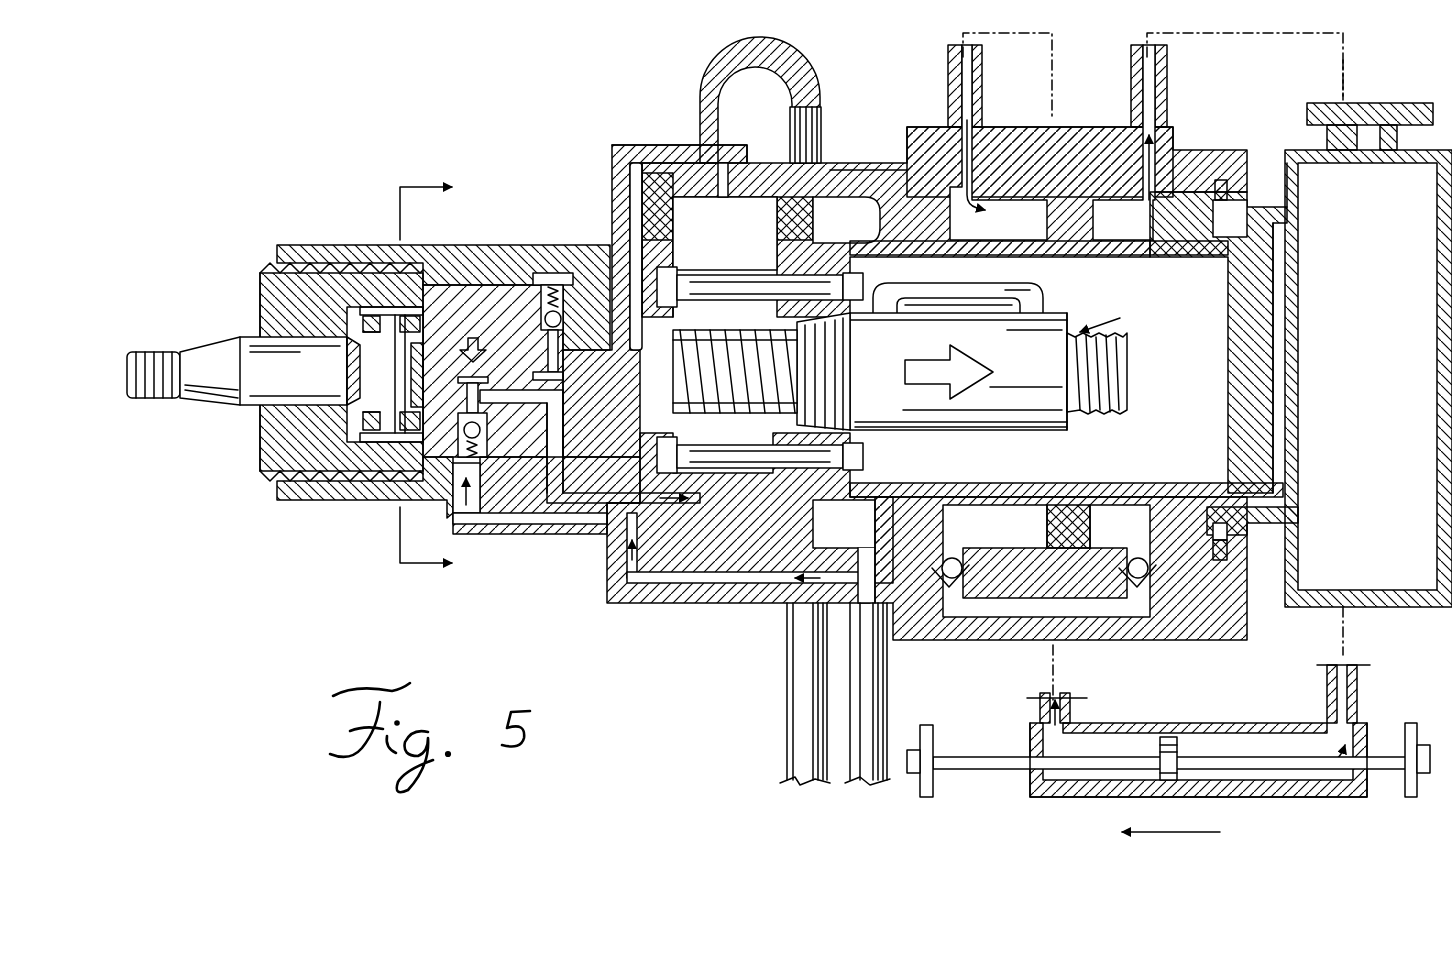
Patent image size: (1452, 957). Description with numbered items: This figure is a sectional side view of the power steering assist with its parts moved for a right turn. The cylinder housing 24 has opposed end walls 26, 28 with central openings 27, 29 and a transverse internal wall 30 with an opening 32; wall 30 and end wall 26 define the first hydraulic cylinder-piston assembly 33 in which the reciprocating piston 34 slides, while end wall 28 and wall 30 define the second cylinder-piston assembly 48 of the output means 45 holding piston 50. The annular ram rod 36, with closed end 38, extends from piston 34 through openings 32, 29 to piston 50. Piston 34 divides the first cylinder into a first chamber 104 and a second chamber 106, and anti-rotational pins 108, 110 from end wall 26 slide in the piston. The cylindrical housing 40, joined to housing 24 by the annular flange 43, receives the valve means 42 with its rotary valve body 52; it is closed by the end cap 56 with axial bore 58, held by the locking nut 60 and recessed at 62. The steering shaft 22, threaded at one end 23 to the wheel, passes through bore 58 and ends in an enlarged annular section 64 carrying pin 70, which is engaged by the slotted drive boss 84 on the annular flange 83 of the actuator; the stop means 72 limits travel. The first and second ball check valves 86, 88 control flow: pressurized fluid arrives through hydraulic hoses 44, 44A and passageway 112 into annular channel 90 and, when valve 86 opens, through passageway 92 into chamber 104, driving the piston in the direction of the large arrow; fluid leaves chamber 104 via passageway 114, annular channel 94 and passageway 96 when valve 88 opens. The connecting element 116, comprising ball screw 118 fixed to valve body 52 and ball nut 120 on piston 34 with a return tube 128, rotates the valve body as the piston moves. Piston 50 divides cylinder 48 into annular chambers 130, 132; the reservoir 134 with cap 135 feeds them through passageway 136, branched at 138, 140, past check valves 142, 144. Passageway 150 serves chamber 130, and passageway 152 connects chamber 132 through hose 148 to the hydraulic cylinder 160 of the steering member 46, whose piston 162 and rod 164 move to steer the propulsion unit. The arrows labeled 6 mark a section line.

The section line 6 is at (442, 380).
The steering shaft 22 is at (212, 340).
The threaded connection 23 is at (140, 352).
The cylinder housing 24 is at (705, 640).
The end wall 26 is at (612, 148).
The centrally disposed opening 27 is at (580, 470).
The end wall 28 is at (1190, 185).
The centrally disposed opening 29 is at (1250, 232).
The transverse internal wall 30 is at (920, 150).
The centrally disposed opening 32 is at (1040, 252).
The first hydraulic cylinder-piston assembly 33 is at (850, 165).
The reciprocating piston 34 is at (720, 190).
The annular ram rod 36 is at (822, 226).
The closed end 38 is at (1268, 335).
The cylindrical housing 40 is at (420, 270).
The valve means 42 is at (555, 270).
The annular flange 43 is at (636, 200).
The hydraulic hoses 44 is at (888, 702).
The supply pipe 44A is at (748, 62).
The output means 45 is at (1195, 658).
The steering member 46 is at (1340, 780).
The second hydraulic cylinder-piston assembly 48 is at (966, 85).
The reciprocating piston 50 is at (1065, 112).
The rotary valve body 52 is at (548, 320).
The end cap 56 is at (330, 262).
The axial bore 58 is at (230, 398).
The locking nut 60 is at (290, 492).
The recess 62 is at (375, 300).
The enlarged annular section 64 is at (446, 300).
The pin 70 is at (348, 356).
The annular stop means 72 is at (398, 300).
The annular flange 83 is at (423, 365).
The drive boss 84 is at (365, 430).
The first ball check valve 86 is at (453, 522).
The second ball check valve 88 is at (560, 295).
The annular channel 90 is at (472, 306).
The fluid passageway 92 is at (545, 500).
The annular channel 94 is at (610, 347).
The fluid passageway 96 is at (600, 232).
The first chamber 104 is at (750, 247).
The second chamber 106 is at (866, 590).
The anti-rotational pin 108 is at (880, 282).
The anti-rotational pin 110 is at (866, 458).
The fluid passageway 112 is at (680, 600).
The passageway 114 is at (598, 540).
The connecting element 116 is at (1122, 316).
The ball screw 118 is at (1118, 345).
The ball nut 120 is at (1012, 432).
The return tube 128 is at (1045, 305).
The annular chamber 130 is at (1003, 215).
The annular chamber 132 is at (1112, 212).
The reservoir 134 is at (1397, 638).
The screw threaded cap 135 is at (1390, 100).
The fluid passageway 136 is at (1205, 602).
The branch 138 is at (1060, 492).
The branch 140 is at (1143, 556).
The check valve 142 is at (955, 582).
The check valve 144 is at (1142, 585).
The hydraulic hose 148 is at (1100, 40).
The passageway 150 is at (1000, 48).
The passageway 152 is at (1148, 100).
The hydraulic cylinder 160 is at (1268, 770).
The piston 162 is at (1150, 780).
The rod 164 is at (1053, 792).